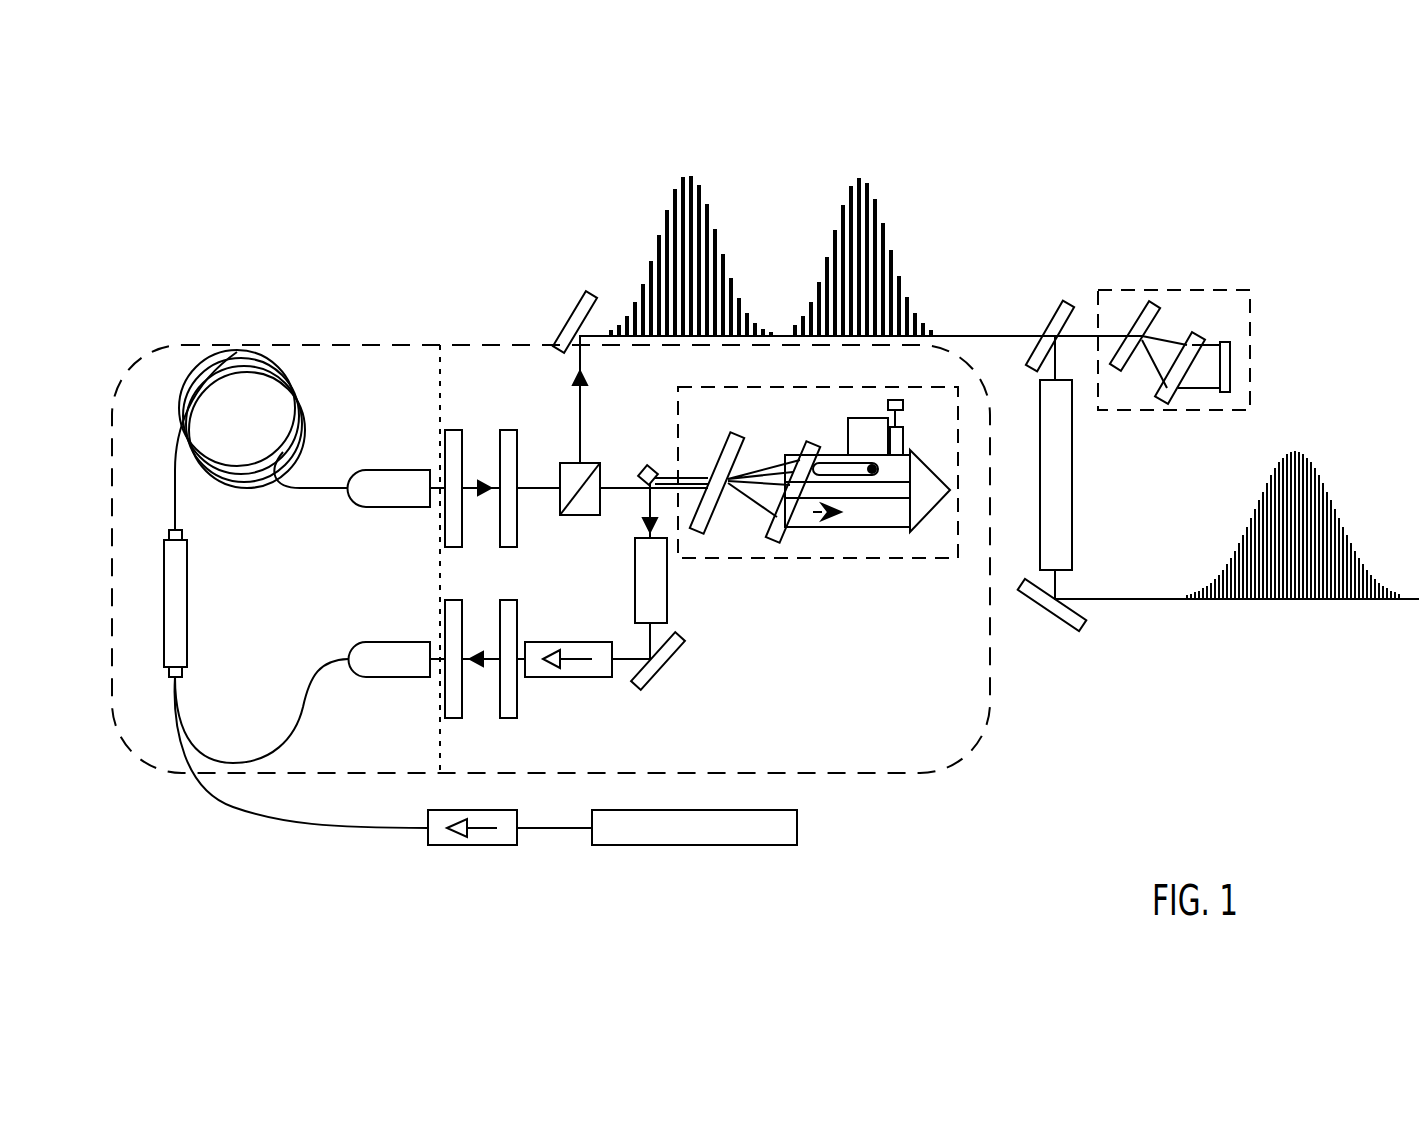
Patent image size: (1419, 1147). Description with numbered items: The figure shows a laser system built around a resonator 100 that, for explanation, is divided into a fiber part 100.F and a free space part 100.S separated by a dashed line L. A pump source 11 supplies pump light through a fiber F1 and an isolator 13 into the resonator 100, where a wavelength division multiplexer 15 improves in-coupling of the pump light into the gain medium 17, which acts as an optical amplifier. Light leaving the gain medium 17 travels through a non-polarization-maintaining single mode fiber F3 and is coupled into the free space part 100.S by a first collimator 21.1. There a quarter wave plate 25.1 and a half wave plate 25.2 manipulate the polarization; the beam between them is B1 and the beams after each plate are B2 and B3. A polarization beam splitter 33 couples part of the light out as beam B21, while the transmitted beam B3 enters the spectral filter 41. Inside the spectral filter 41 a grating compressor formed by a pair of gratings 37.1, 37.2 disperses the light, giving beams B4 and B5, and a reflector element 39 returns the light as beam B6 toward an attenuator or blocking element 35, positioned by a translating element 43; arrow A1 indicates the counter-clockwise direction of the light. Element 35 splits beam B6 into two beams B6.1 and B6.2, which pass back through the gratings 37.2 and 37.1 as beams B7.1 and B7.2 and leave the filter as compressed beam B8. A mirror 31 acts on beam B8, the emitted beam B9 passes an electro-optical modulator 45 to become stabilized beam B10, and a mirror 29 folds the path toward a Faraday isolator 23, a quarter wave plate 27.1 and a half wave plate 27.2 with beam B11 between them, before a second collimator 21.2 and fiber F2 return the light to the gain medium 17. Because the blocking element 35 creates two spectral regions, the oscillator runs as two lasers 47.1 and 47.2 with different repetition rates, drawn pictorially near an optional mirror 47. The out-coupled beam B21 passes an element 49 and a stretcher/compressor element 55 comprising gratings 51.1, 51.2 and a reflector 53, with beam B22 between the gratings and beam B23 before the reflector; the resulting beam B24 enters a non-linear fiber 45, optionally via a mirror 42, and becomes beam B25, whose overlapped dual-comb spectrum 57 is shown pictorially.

The pump source 11 is at (707, 842).
The isolator 13 is at (497, 845).
The wavelength division multiplexer 15 is at (187, 603).
The gain medium 17 is at (175, 470).
The first collimator 21.1 is at (413, 504).
The second collimator 21.2 is at (413, 676).
The Faraday isolator 23 is at (568, 677).
The quarter wave plate 25.1 is at (454, 434).
The half wave plate 25.2 is at (508, 434).
The quarter wave plate 27.1 is at (454, 604).
The half wave plate 27.2 is at (508, 604).
The mirror 29 is at (672, 667).
The mirror 31 is at (640, 467).
The polarization beam splitter 33 is at (567, 463).
The attenuator or blocking element 35 is at (862, 486).
The first grating 37.1 is at (703, 537).
The second grating 37.2 is at (780, 545).
The reflector element 39 is at (934, 514).
The spectral filter 41 is at (918, 560).
The mirror 42 is at (1061, 612).
The translating element 43 is at (901, 394).
The electro-optical modulator 45 is at (662, 591).
The mirror 47 is at (573, 313).
The first laser 47.1 is at (659, 200).
The second laser 47.2 is at (833, 200).
The beam splitter mirror 49 is at (1049, 307).
The first dispersive element 51.1 is at (1137, 327).
The second dispersive element 51.2 is at (1178, 340).
The reflector 53 is at (1232, 363).
The stretcher/compressor element 55 is at (1251, 307).
The overlapped dualcomb spectrum beam 57 is at (1349, 507).
The resonator 100 is at (551, 578).
The fiber part 100.F is at (270, 671).
The free space part 100.S is at (912, 758).
The dashed line L is at (440, 343).
The fiber F1 is at (292, 832).
The single mode fiber F2 is at (307, 736).
The single mode fiber F3 is at (308, 498).
The arrow A1 is at (820, 529).
The light beam B1 is at (478, 502).
The light beam B2 is at (533, 499).
The light beam B3 is at (613, 495).
The light beam B4 is at (745, 514).
The light beam B5 is at (882, 530).
The light beam B6 is at (905, 448).
The light beam B6.1 is at (830, 453).
The light beam B6.2 is at (838, 470).
The light beam B7.1 is at (758, 460).
The light beam B7.2 is at (781, 468).
The light beam B8 is at (693, 470).
The light beam B9 is at (636, 520).
The light beam B10 is at (643, 645).
The light beam B11 is at (480, 674).
The light beam B21 is at (582, 418).
The light beam B22 is at (1147, 365).
The light beam B23 is at (1198, 386).
The light beam B24 is at (1050, 367).
The light beam B25 is at (1153, 596).